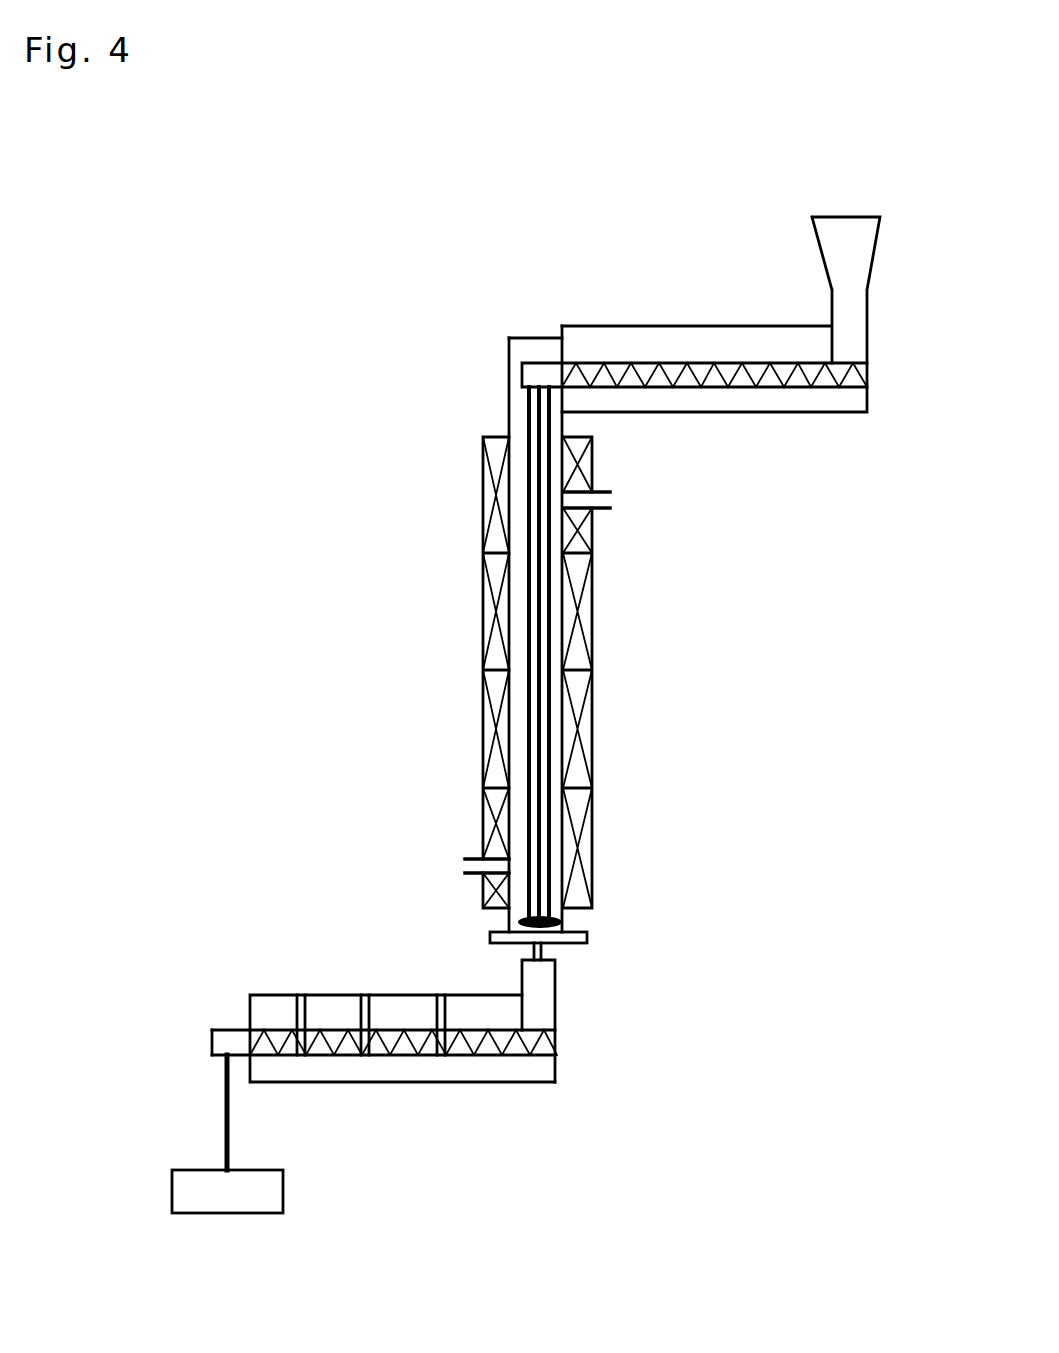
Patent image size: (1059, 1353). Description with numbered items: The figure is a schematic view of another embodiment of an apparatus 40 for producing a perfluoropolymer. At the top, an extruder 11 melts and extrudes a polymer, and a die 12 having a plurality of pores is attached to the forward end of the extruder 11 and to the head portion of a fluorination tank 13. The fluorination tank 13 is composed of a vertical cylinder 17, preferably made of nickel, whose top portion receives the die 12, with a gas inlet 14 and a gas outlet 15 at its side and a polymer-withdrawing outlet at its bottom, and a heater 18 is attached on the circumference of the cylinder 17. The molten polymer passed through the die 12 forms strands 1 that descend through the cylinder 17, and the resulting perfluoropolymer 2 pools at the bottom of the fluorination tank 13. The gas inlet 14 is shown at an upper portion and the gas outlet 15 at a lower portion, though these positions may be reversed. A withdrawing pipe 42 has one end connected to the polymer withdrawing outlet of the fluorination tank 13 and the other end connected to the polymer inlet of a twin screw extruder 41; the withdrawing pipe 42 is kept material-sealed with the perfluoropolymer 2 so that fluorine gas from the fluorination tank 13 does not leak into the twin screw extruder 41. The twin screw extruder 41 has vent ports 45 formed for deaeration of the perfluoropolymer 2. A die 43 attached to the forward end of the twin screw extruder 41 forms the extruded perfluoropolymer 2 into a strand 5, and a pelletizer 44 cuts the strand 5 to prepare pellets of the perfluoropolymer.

The apparatus for producing a perfluoropolymer 40 is at (443, 220).
The extruder 11 is at (694, 325).
The die 12 is at (535, 360).
The vertical cylinder 17 is at (508, 392).
The strands 1 is at (553, 818).
The perfluoropolymer 2 is at (553, 913).
The heater 18 is at (483, 637).
The gas inlet 14 is at (605, 491).
The fluorination tank 13 is at (604, 572).
The gas outlet 15 is at (478, 858).
The withdrawing pipe 42 is at (543, 947).
The twin screw extruder 41 is at (462, 1083).
The vent ports 45 is at (301, 995).
The die 43 is at (228, 1030).
The strand 5 is at (229, 1127).
The pelletizer 44 is at (189, 1170).